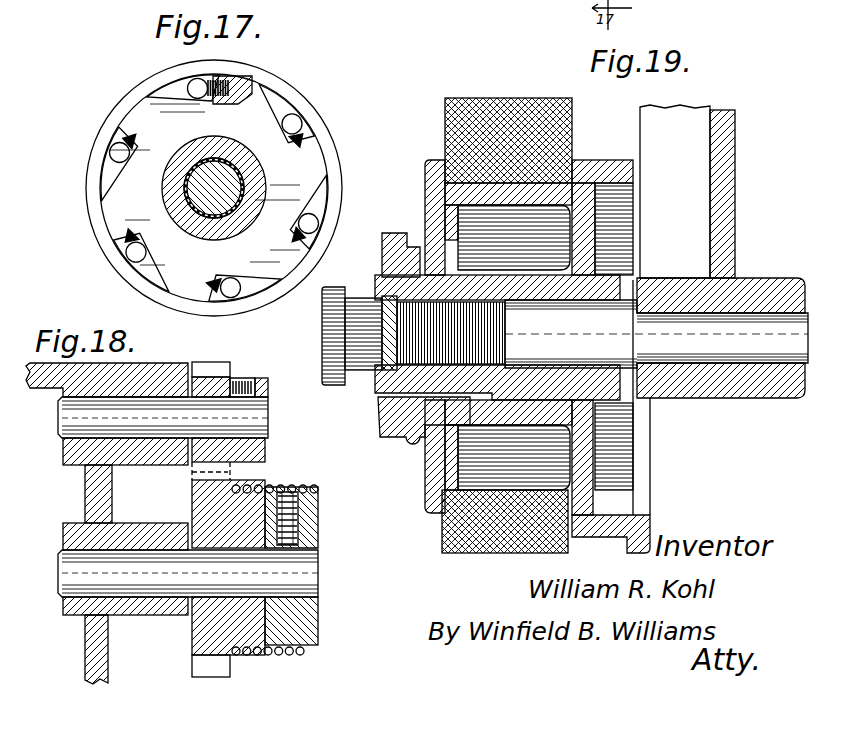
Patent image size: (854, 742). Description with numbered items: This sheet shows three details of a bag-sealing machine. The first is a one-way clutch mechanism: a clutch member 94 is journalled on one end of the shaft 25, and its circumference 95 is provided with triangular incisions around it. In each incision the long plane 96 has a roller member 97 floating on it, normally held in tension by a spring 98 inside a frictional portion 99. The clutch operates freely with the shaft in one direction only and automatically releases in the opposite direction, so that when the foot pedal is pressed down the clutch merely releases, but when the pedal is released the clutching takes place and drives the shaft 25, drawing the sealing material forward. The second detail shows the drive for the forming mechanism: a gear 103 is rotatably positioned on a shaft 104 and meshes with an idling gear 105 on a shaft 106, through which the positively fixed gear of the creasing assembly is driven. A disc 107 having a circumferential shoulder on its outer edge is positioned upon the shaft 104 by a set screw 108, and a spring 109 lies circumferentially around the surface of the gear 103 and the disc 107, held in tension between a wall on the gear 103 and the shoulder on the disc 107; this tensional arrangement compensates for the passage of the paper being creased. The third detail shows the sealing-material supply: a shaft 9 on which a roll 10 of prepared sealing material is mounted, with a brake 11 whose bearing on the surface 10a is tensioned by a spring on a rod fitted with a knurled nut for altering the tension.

In FIG. 19, the shaft 9 is at (745, 327).
In FIG. 19, the roll of prepared sealing material 10 is at (528, 98).
In FIG. 19, the bearing surface 10a is at (594, 504).
In FIG. 19, the brake 11 is at (645, 532).
In FIG. 17, the shaft 25 is at (226, 170).
In FIG. 17, the clutch member 94 is at (218, 232).
In FIG. 17, the circumference 95 is at (312, 152).
In FIG. 17, the long plane 96 is at (275, 105).
In FIG. 17, the roller member 97 is at (196, 84).
In FIG. 17, the spring 98 is at (243, 76).
In FIG. 17, the frictional portion 99 is at (305, 104).
In FIG. 19, the frictional portion 99 is at (533, 15).
In FIG. 18, the gear 103 is at (197, 670).
In FIG. 18, the shaft 104 is at (305, 578).
In FIG. 18, the idling gear 105 is at (222, 372).
In FIG. 18, the shaft 106 is at (262, 424).
In FIG. 18, the disc 107 is at (320, 522).
In FIG. 18, the set screw 108 is at (320, 500).
In FIG. 18, the spring 109 is at (280, 486).